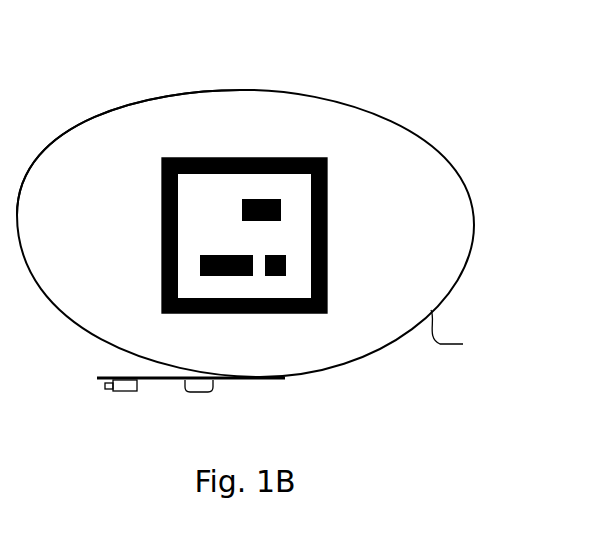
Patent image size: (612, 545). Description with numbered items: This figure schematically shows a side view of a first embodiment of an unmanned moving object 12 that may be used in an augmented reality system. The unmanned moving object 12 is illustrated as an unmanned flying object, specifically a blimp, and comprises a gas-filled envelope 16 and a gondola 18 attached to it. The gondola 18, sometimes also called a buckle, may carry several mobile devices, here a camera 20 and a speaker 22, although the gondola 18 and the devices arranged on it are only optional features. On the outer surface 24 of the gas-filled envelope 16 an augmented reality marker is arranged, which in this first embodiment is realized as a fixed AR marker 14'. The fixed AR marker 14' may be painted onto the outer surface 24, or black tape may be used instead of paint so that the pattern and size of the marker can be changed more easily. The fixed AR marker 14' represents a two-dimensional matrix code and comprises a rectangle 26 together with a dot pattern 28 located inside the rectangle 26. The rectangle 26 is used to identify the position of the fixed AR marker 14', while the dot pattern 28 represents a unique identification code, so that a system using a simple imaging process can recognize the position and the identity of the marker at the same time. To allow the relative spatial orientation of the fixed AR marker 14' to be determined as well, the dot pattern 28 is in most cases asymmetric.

The unmanned moving object 12 is at (319, 92).
The fixed AR marker 14' is at (327, 210).
The gas-filled envelope 16 is at (460, 335).
The gondola 18 is at (253, 380).
The camera 20 is at (124, 386).
The speaker 22 is at (198, 389).
The outer surface 24 is at (122, 138).
The rectangle 26 is at (232, 158).
The dot pattern 28 is at (242, 207).